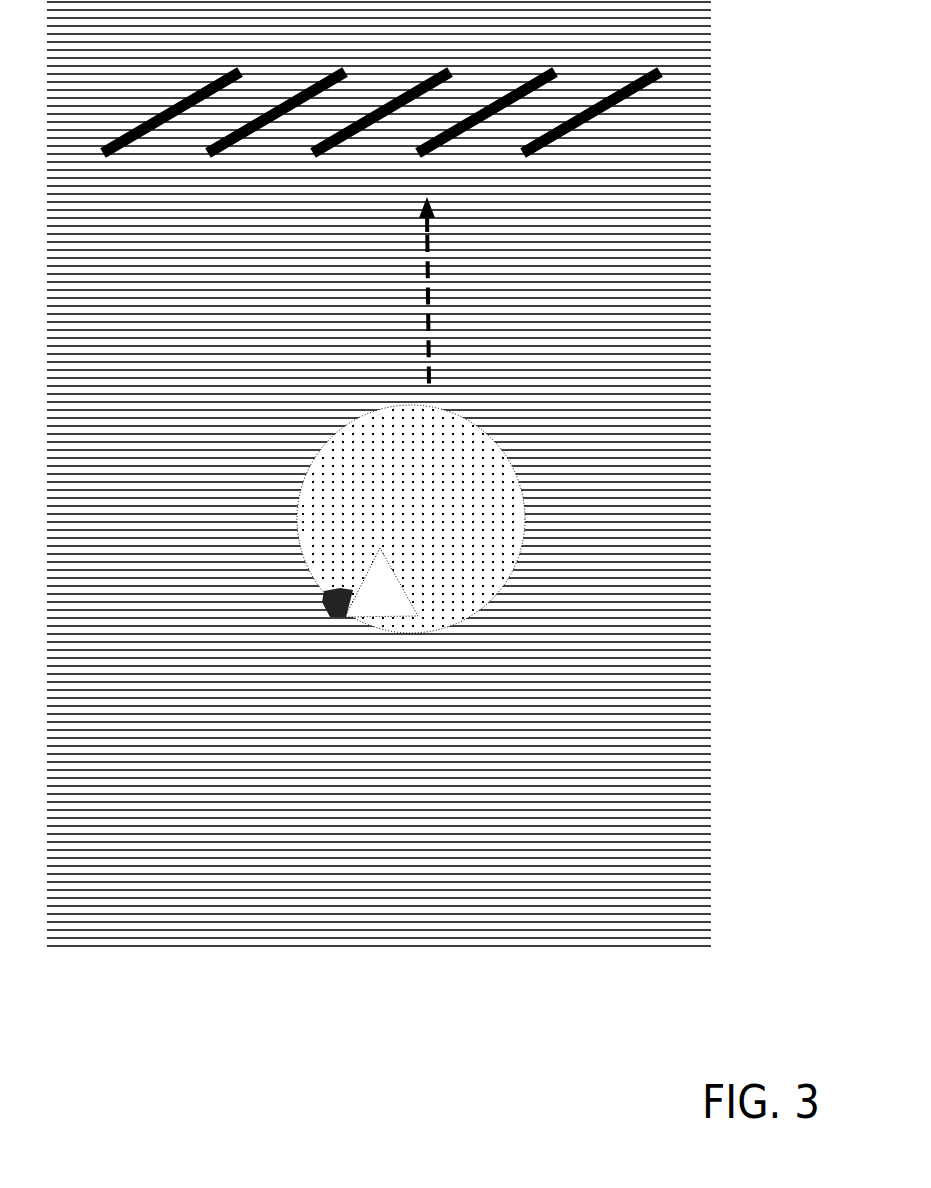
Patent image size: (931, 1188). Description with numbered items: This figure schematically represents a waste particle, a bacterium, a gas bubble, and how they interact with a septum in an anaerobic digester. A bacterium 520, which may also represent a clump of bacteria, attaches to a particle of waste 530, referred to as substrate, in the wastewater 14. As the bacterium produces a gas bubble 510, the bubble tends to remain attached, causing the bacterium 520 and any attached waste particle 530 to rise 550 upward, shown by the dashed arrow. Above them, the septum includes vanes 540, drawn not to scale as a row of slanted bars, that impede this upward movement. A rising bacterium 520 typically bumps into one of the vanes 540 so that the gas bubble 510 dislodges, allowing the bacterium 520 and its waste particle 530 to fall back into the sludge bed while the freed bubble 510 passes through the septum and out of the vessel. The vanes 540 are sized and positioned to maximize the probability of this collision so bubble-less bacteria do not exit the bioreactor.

The wastewater 14 is at (231, 365).
The gas bubble 510 is at (411, 519).
The bacterium 520 is at (378, 592).
The waste particle 530 is at (324, 592).
The vanes 540 is at (658, 113).
The rise 550 is at (501, 290).